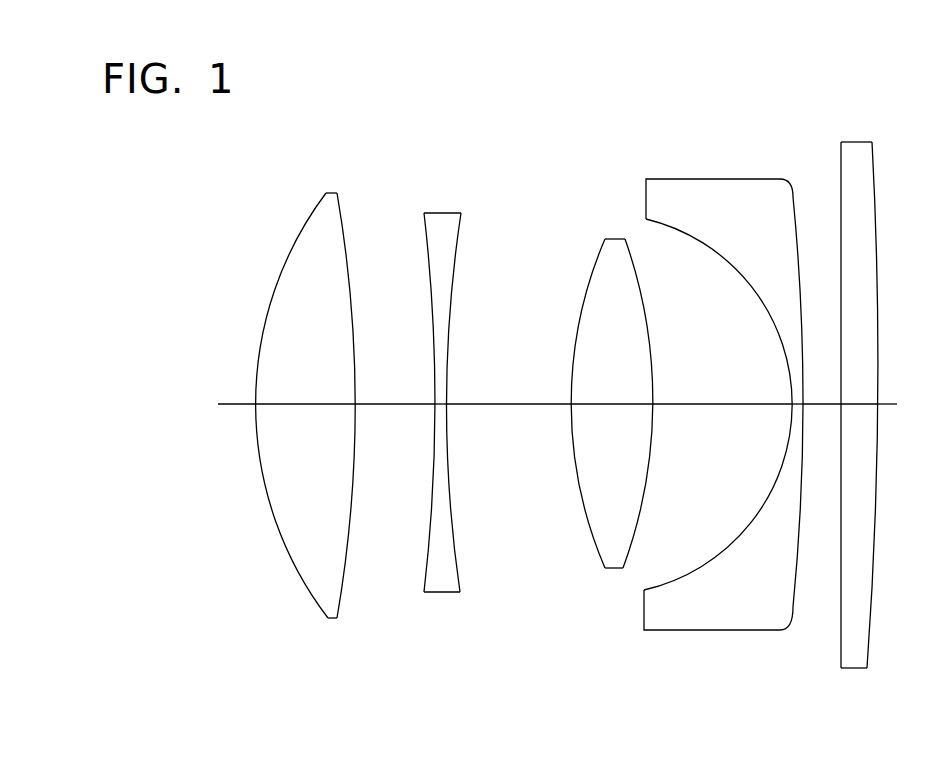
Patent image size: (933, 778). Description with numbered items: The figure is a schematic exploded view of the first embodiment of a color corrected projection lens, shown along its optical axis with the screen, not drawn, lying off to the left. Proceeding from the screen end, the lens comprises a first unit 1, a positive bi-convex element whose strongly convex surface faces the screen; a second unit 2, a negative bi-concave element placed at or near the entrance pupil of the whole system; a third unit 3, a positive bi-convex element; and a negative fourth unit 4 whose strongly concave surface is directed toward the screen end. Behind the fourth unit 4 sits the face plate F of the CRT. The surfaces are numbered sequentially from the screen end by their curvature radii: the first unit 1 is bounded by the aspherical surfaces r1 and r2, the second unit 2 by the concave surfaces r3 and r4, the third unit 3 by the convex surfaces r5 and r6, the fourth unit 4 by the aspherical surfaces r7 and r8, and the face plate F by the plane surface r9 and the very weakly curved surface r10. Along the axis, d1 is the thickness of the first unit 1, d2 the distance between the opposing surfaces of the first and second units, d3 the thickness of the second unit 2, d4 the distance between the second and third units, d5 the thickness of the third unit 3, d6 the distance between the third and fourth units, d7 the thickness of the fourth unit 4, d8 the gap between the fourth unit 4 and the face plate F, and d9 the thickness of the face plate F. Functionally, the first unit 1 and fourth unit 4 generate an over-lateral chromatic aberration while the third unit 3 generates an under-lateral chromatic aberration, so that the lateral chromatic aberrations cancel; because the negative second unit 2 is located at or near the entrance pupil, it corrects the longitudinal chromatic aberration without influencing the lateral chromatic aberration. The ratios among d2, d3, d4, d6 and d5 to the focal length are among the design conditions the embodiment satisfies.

The first unit 1 is at (305, 423).
The second unit 2 is at (438, 423).
The third unit 3 is at (610, 425).
The fourth unit 4 is at (739, 426).
The face plate F is at (866, 426).
The curvature radius of first surface r1 is at (257, 370).
The curvature radius of second surface r2 is at (357, 372).
The curvature radius of third surface r3 is at (433, 372).
The curvature radius of fourth surface r4 is at (448, 370).
The curvature radius of fifth surface r5 is at (572, 369).
The curvature radius of sixth surface r6 is at (652, 371).
The curvature radius of seventh surface r7 is at (787, 373).
The curvature radius of eighth surface r8 is at (805, 373).
The curvature radius of ninth surface r9 is at (842, 375).
The curvature radius of tenth surface r10 is at (878, 375).
The thickness of first unit d1 is at (295, 402).
The distance between first and second units d2 is at (398, 403).
The thickness of second unit d3 is at (447, 401).
The distance between second and third units d4 is at (520, 403).
The thickness of third unit d5 is at (600, 402).
The distance between third and fourth units d6 is at (728, 403).
The thickness of fourth unit d7 is at (796, 402).
The distance between fourth unit and face plate d8 is at (828, 403).
The thickness of face plate d9 is at (863, 403).